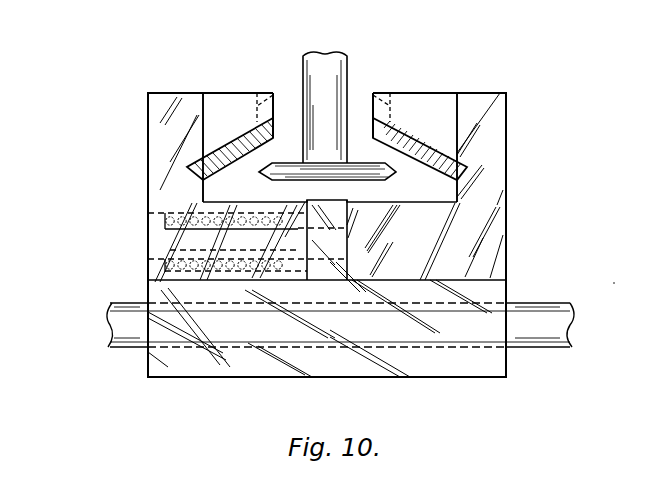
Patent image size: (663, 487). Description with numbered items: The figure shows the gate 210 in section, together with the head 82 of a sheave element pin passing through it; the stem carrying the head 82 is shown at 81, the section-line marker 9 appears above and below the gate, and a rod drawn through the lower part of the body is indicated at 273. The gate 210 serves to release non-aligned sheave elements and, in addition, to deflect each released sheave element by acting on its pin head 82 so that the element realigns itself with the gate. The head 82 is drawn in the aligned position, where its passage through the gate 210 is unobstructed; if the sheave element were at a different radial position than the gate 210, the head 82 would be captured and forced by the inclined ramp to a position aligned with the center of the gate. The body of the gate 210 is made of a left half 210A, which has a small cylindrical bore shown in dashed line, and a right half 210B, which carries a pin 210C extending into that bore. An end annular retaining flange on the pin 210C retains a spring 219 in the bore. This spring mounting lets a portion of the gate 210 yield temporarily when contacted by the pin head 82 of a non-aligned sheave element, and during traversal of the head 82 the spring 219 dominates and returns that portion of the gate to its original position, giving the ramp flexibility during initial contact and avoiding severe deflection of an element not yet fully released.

The section line 9- 9 is at (325, 82).
The gate 210 is at (158, 89).
The left half of gate body 210A is at (156, 168).
The right half of gate body 210B is at (497, 145).
The pin 210C is at (170, 244).
The spring 219 is at (172, 266).
The valve stem 81 is at (345, 89).
The pin head 82 is at (391, 174).
The pipe 273 is at (118, 322).